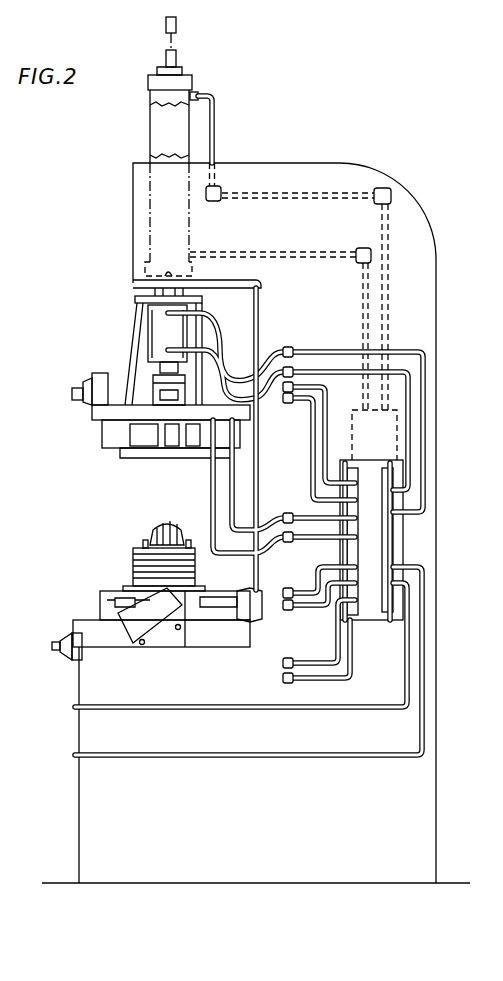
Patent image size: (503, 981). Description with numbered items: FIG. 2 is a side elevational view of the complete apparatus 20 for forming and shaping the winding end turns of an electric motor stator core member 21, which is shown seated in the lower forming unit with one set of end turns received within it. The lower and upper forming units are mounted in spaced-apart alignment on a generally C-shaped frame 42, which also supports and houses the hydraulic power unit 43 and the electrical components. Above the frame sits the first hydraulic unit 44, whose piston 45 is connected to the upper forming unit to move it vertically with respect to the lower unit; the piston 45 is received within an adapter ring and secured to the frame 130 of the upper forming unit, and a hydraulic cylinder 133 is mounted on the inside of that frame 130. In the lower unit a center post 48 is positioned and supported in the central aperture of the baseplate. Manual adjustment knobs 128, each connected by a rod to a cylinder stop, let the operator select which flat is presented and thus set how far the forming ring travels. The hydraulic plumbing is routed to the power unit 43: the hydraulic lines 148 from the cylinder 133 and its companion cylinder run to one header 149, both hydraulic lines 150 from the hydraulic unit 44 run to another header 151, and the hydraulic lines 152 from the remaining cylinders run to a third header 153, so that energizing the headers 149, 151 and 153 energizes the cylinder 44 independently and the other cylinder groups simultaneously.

The apparatus 20 is at (484, 579).
The stator core member 21 is at (130, 566).
The C-shaped frame 42 is at (425, 308).
The hydraulic power unit 43 is at (397, 434).
The first hydraulic unit 44 is at (160, 155).
The piston 45 is at (177, 62).
The center post 48 is at (167, 527).
The manual adjustment knob 128 is at (77, 407).
The frame 130 is at (127, 352).
The hydraulic cylinder 133 is at (158, 330).
The hydraulic lines 148 is at (218, 342).
The header 149 is at (388, 540).
The hydraulic lines 150 is at (215, 128).
The header 151 is at (358, 407).
The hydraulic lines 152 is at (324, 441).
The third header 153 is at (353, 552).